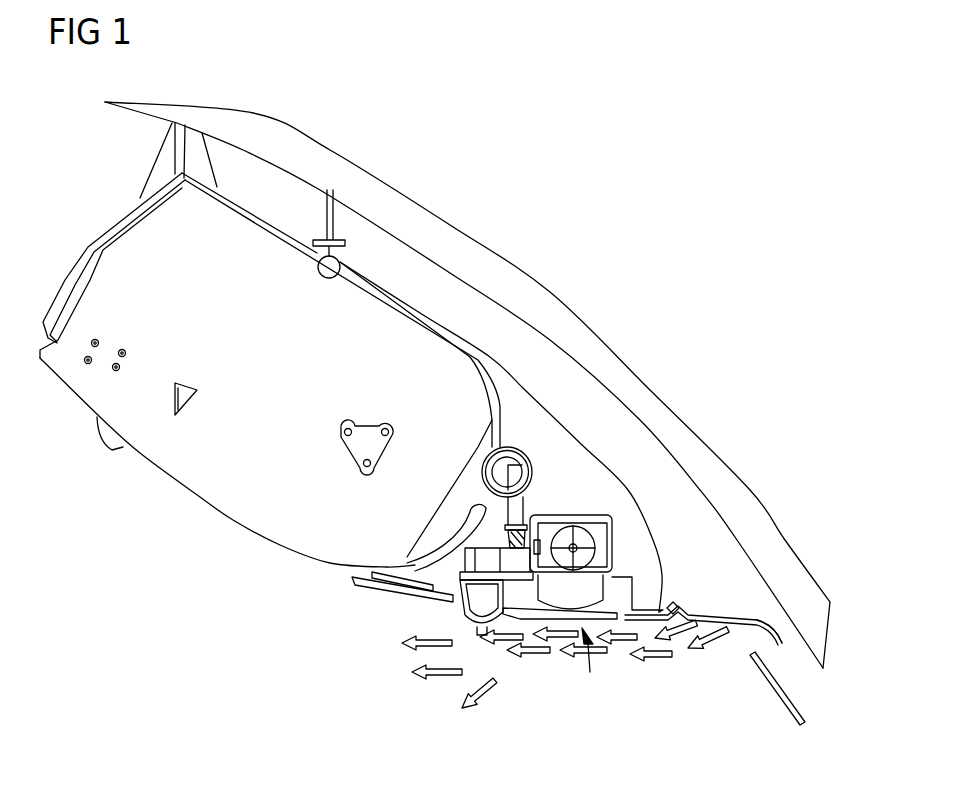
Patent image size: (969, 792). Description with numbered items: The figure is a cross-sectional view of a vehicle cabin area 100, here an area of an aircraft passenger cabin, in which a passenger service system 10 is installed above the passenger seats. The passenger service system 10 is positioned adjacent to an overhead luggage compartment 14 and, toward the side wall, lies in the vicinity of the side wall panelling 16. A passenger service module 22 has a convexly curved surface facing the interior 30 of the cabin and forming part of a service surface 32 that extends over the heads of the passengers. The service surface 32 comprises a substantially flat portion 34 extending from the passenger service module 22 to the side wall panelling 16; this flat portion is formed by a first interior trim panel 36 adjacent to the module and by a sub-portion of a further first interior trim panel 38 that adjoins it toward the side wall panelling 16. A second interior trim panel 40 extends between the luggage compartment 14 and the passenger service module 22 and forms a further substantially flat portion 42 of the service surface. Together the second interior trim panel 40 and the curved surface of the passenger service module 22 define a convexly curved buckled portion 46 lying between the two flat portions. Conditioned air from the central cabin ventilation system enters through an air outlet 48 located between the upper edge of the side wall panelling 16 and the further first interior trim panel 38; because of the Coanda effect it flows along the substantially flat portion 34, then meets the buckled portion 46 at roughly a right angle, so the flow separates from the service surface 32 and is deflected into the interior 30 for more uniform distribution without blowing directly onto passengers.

The vehicle cabin area 100 is at (617, 308).
The passenger service system 10 is at (512, 675).
The overhead luggage compartment 14 is at (162, 447).
The side wall panelling 16 is at (782, 703).
The passenger service module 22 is at (455, 611).
The interior 30 is at (235, 636).
The service surface 32 is at (593, 666).
The substantially flat portion 34 is at (617, 640).
The first interior trim panel 36 is at (527, 645).
The further first interior trim panel 38 is at (697, 606).
The second interior trim panel 40 is at (375, 587).
The further substantially flat portion 42 is at (397, 590).
The convexly curved buckled portion 46 is at (470, 636).
The air outlet 48 is at (747, 642).